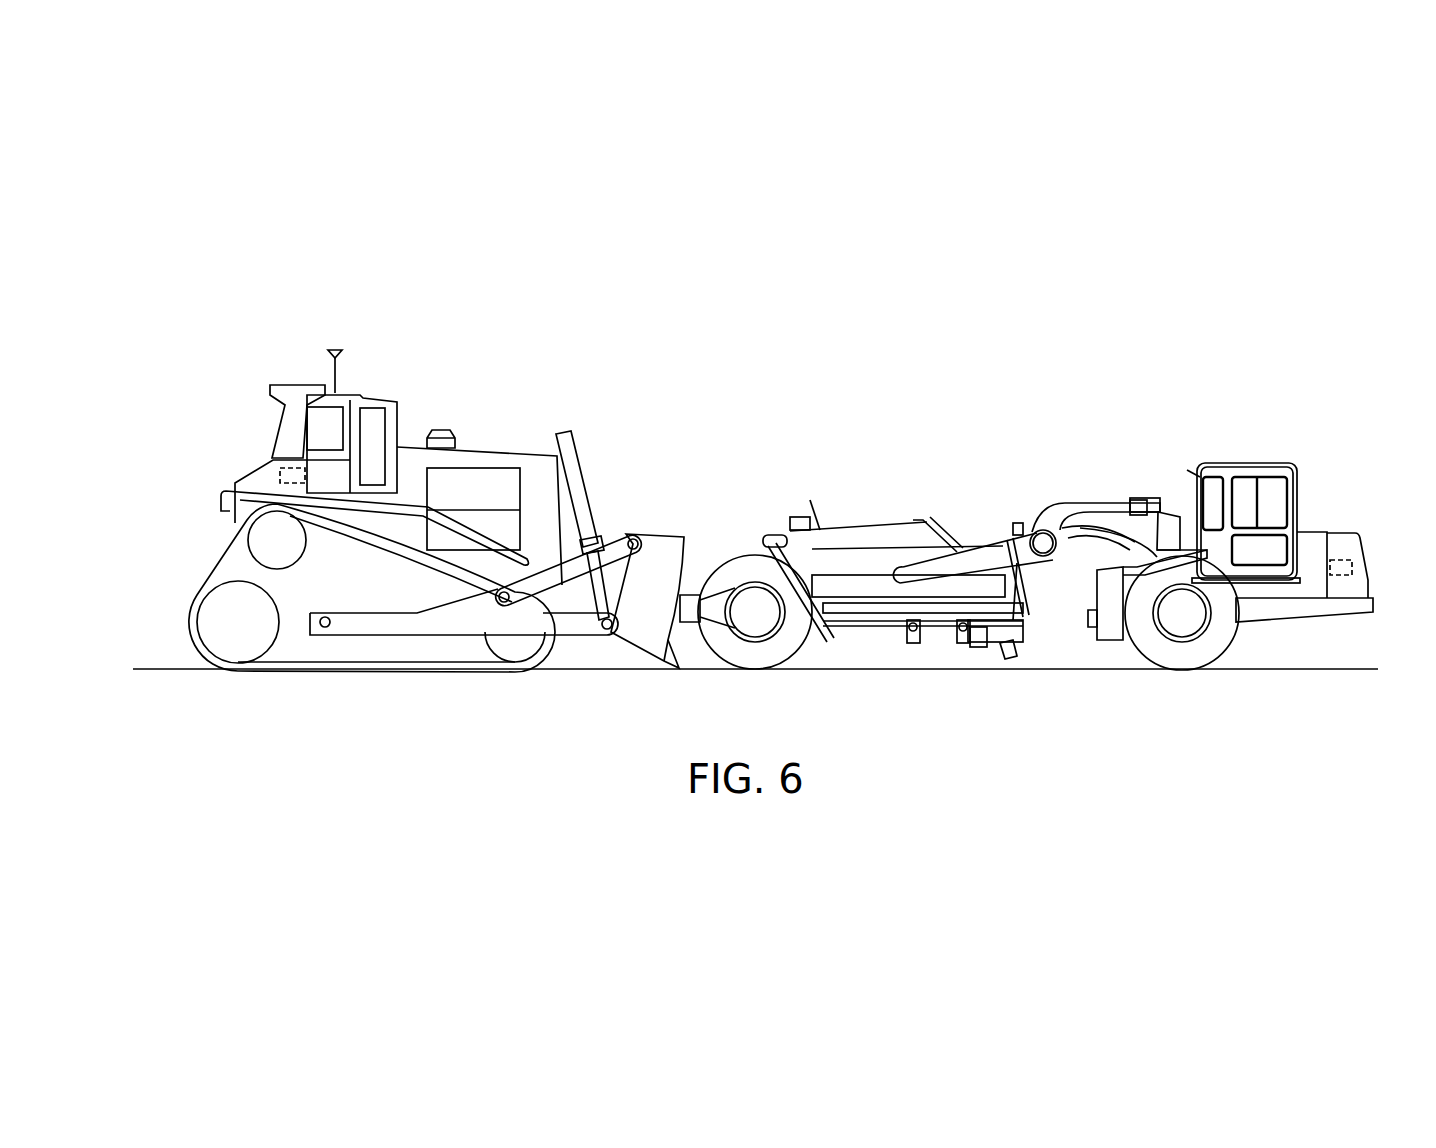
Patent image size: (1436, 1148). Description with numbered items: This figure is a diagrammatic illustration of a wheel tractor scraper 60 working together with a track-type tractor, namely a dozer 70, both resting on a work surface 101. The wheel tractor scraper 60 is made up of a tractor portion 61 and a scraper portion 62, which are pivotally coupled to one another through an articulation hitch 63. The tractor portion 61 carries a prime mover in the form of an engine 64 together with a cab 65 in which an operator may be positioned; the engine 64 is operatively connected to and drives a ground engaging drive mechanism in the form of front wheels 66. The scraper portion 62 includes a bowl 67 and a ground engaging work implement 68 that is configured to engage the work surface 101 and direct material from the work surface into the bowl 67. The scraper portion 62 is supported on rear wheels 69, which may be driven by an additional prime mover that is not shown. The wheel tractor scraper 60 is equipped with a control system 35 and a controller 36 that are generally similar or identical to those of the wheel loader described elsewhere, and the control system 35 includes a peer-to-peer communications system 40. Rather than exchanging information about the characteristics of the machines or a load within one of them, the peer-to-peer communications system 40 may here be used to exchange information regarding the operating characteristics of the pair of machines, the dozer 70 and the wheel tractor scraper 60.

The control system 35 is at (252, 410).
The controller 36 is at (277, 475).
The peer-to-peer communications system 40 is at (349, 335).
The wheel tractor scraper 60 is at (1080, 392).
The tractor portion 61 is at (1357, 550).
The scraper portion 62 is at (872, 525).
The articulation hitch 63 is at (1065, 527).
The engine 64 is at (1310, 547).
The cab 65 is at (1247, 462).
The front wheels 66 is at (1197, 653).
The bowl 67 is at (780, 537).
The ground engaging work implement 68 is at (1000, 653).
The rear wheels 69 is at (780, 652).
The dozer 70 is at (478, 422).
The work surface 101 is at (1300, 672).